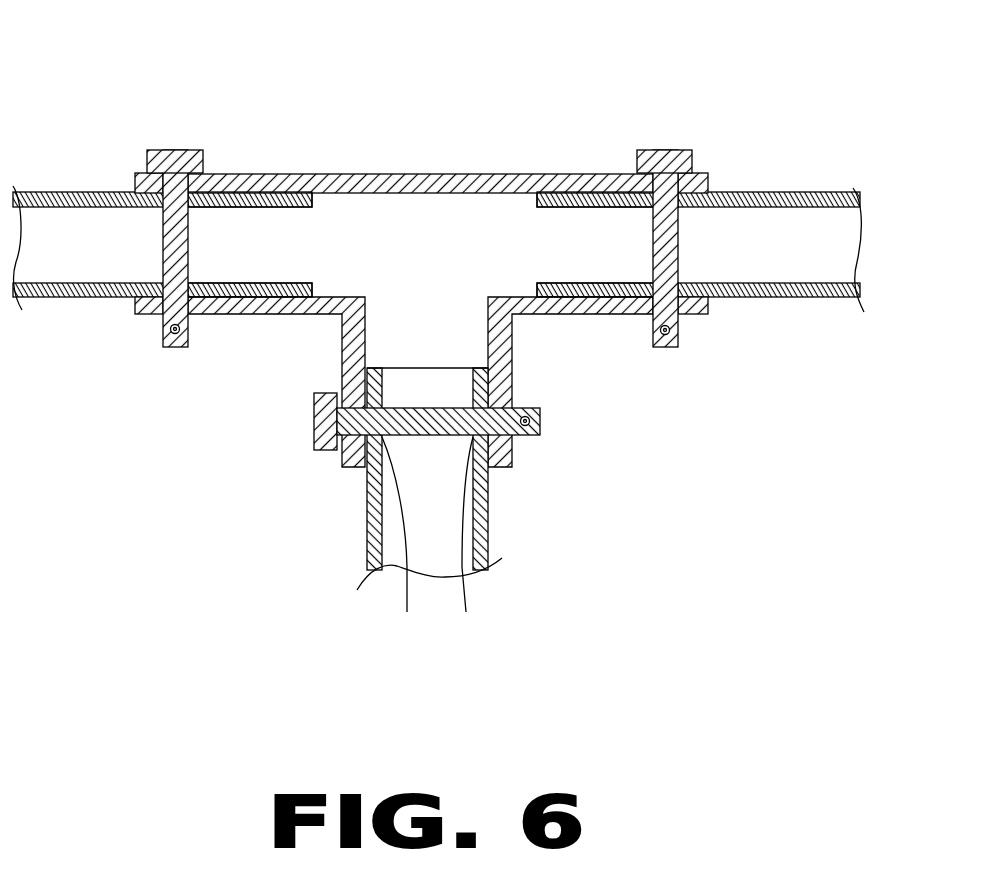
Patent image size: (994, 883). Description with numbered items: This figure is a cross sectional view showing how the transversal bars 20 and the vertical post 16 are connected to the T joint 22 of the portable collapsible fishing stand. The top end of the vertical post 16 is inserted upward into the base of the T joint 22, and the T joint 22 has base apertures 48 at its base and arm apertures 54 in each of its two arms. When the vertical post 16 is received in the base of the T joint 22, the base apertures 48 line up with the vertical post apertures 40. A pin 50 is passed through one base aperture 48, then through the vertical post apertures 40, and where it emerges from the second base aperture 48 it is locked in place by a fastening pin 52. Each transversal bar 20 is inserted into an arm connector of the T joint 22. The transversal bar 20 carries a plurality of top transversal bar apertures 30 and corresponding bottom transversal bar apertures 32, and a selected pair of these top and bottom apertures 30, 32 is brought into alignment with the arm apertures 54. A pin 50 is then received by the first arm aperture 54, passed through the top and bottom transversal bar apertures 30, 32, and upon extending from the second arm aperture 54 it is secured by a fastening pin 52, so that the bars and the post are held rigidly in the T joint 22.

The vertical post 16 is at (490, 515).
The transversal bar 20 is at (70, 192).
The T joint 22 is at (410, 174).
The top transversal bar apertures 30 is at (190, 208).
The bottom transversal bar apertures 32 is at (190, 283).
The vertical post apertures 40 is at (435, 544).
The base apertures 48 is at (541, 435).
The pin 50 is at (172, 150).
The fastening pin 52 is at (172, 333).
The arm apertures 54 is at (202, 174).